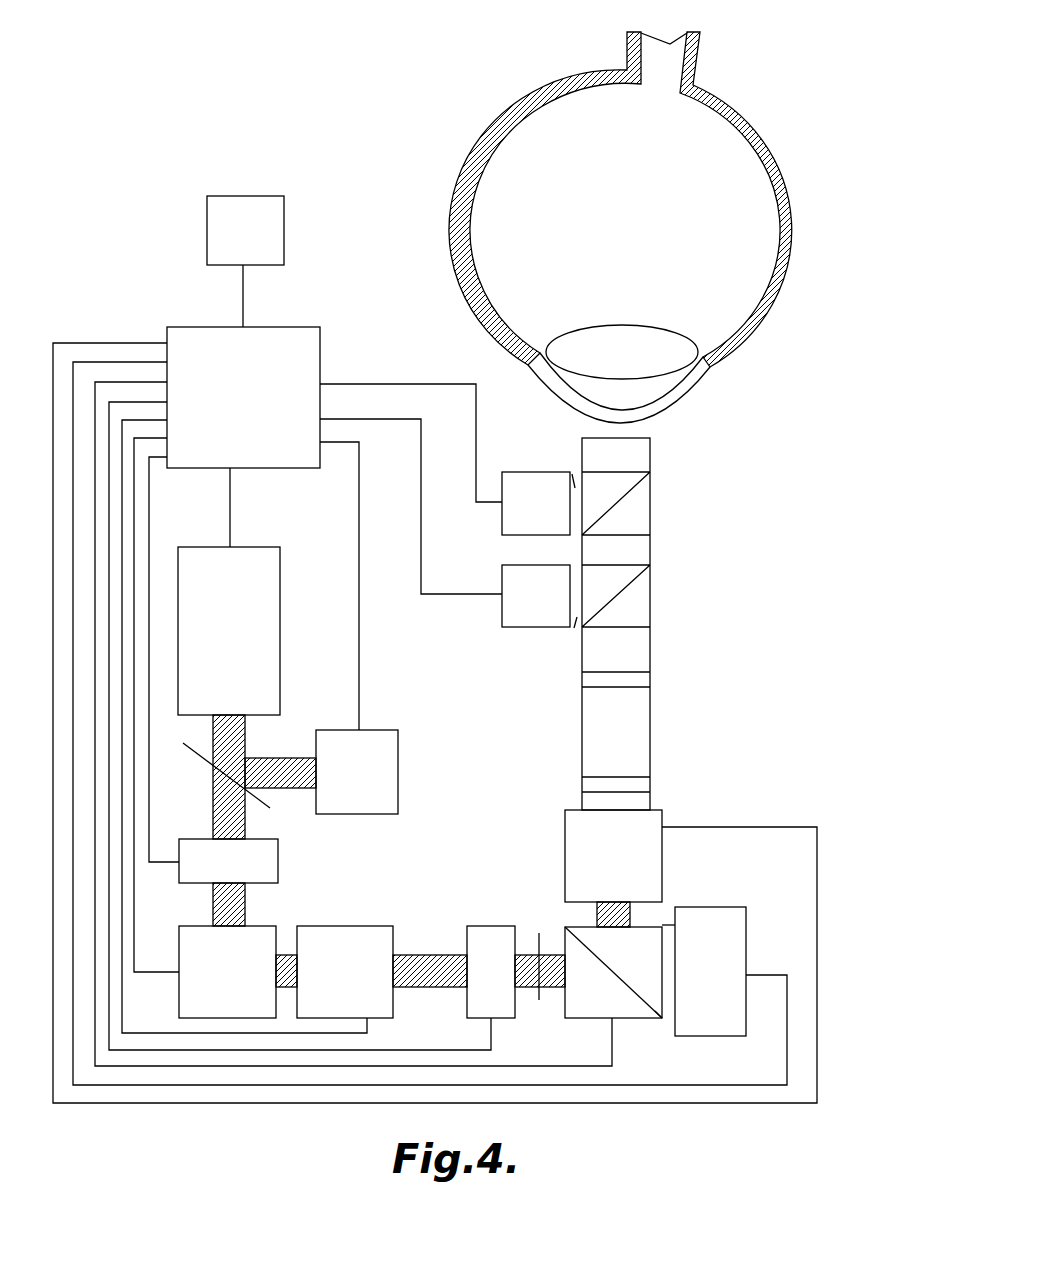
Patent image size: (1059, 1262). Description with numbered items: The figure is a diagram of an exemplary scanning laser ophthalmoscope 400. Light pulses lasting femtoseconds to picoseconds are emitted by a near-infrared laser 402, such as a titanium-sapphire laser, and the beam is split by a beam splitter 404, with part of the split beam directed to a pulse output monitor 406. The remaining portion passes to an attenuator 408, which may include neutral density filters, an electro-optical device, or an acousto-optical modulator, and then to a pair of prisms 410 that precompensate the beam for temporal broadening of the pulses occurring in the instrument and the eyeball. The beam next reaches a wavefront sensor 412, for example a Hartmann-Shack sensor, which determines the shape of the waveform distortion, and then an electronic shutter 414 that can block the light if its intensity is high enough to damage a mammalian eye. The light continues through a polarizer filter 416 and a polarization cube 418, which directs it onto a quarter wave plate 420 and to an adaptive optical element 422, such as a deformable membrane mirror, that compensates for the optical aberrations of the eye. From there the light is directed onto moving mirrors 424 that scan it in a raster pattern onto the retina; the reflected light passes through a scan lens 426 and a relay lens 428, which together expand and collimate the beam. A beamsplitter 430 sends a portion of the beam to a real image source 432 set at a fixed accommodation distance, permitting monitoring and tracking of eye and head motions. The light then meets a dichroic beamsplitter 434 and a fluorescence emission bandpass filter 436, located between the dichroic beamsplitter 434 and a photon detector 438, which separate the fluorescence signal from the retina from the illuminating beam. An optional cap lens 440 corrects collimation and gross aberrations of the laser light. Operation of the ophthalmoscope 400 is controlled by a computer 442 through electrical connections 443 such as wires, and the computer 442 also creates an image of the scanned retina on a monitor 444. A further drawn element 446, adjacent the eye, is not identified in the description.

The scanning laser ophthalmoscope 400 is at (243, 95).
The near-infrared laser 402 is at (280, 625).
The beam splitter 404 is at (212, 763).
The pulse output monitor 406 is at (398, 775).
The attenuator 408 is at (278, 862).
The pair of prisms 410 is at (277, 943).
The wavefront sensor 412 is at (395, 943).
The electronic shutter 414 is at (491, 925).
The polarizer filter 416 is at (539, 1003).
The polarization cube 418 is at (622, 1020).
The quarter wave plate 420 is at (665, 1013).
The adaptive optical element 422 is at (746, 942).
The moving mirrors 424 is at (662, 860).
The scan lens 426 is at (640, 785).
The relay lens 428 is at (640, 678).
The beamsplitter 430 is at (622, 596).
The real image source 432 is at (577, 620).
The dichroic beamsplitter 434 is at (628, 495).
The fluorescence emission bandpass filter 436 is at (575, 482).
The photon detector 438 is at (520, 472).
The cap lens 440 is at (650, 450).
The computer 442 is at (320, 345).
The electrical connections 443 is at (98, 362).
The monitor 444 is at (490, 104).
The cornea 446 is at (690, 416).